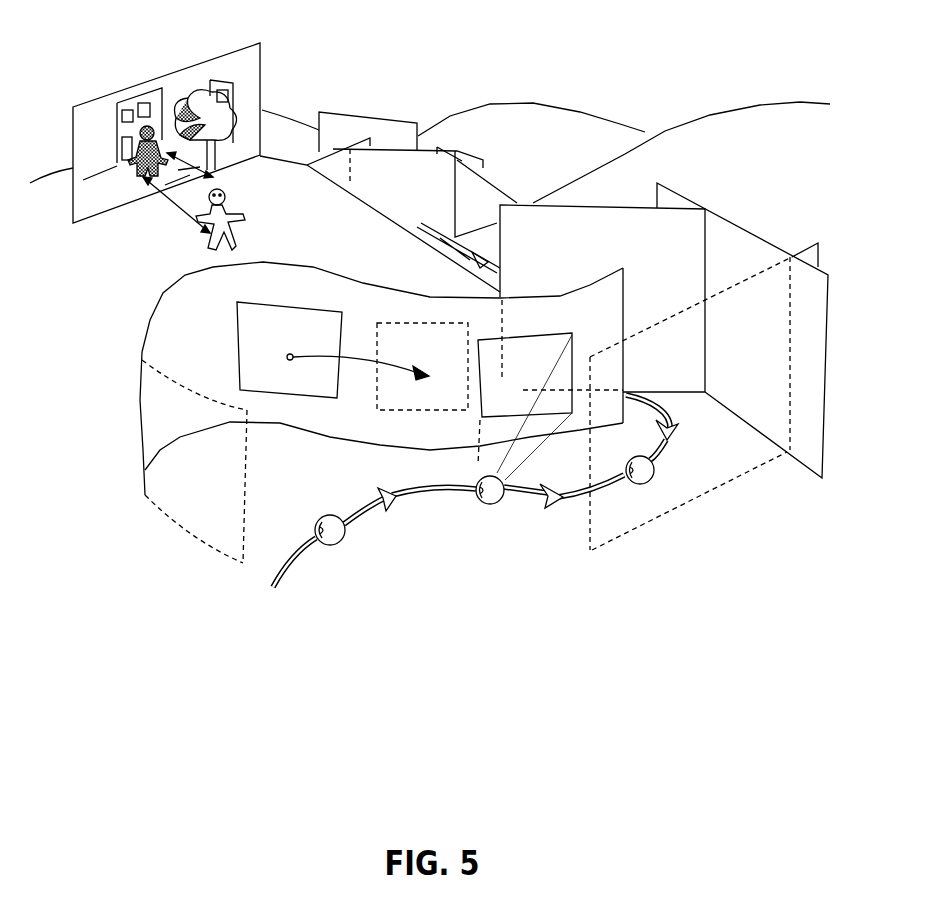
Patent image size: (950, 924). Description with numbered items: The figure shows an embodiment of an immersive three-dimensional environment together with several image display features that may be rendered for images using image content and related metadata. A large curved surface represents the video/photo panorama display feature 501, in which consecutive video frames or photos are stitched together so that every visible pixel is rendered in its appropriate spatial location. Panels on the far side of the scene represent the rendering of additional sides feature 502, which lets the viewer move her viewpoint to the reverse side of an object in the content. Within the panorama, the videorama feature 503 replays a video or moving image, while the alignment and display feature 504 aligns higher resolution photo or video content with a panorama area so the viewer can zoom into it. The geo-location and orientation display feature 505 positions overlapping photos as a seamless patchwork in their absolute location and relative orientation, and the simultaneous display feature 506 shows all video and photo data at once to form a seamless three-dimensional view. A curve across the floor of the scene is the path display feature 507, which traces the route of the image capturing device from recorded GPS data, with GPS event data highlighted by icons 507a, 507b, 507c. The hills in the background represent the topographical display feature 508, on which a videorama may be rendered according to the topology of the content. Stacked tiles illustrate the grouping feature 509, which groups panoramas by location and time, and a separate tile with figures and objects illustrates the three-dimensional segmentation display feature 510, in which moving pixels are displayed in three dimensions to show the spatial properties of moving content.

The video/photo panorama display feature 501 is at (381, 378).
The rendering of additional sides feature 502 is at (486, 374).
The videorama feature 503 is at (352, 356).
The alignment and display feature 504 is at (525, 406).
The geo-location and 3D orientation display feature 505 is at (602, 298).
The simultaneous display feature 506 is at (593, 345).
The path display feature 507 is at (475, 491).
The icon 507a is at (342, 549).
The icon 507b is at (471, 481).
The icon 507c is at (666, 470).
The topographical display feature 508 is at (681, 151).
The grouping feature 509 is at (452, 197).
The 3D segmentation display feature 510 is at (174, 146).